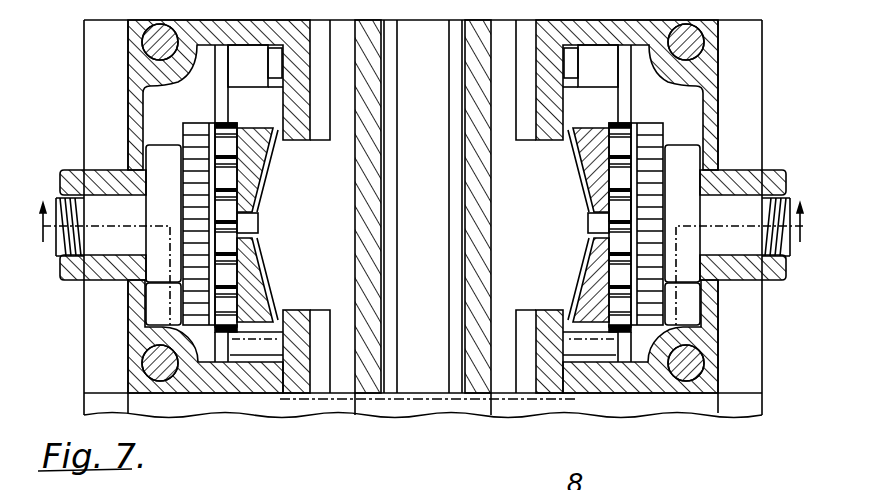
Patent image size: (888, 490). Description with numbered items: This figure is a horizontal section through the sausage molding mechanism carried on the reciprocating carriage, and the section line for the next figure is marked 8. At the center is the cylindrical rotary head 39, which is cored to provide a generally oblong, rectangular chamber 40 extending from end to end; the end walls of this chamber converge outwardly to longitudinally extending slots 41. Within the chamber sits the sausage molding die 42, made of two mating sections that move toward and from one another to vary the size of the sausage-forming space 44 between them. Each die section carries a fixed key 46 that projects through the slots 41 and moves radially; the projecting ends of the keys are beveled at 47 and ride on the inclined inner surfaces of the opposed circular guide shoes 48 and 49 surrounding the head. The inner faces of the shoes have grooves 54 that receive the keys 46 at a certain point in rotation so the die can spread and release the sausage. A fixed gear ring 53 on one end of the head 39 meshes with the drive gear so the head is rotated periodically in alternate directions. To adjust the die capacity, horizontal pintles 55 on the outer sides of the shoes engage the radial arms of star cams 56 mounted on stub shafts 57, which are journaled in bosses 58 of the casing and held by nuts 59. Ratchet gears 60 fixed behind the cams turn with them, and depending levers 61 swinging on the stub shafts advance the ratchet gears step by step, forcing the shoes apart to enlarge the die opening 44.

The section line 8- 8 is at (422, 227).
The rotary head 39 is at (550, 393).
The chamber 40 is at (311, 396).
The slots 41 is at (300, 310).
The sausage molding die 42 is at (365, 395).
The sausage-forming space 44 is at (433, 385).
The key 46 is at (537, 168).
The beveled ends 47 is at (266, 292).
The guide shoe 48 is at (251, 128).
The guide shoe 49 is at (270, 306).
The gear ring 53 is at (574, 78).
The grooves 54 is at (256, 208).
The pintles 55 is at (218, 121).
The star cam 56 is at (620, 204).
The stub shaft 57 is at (72, 281).
The boss 58 is at (742, 172).
The nut 59 is at (70, 170).
The ratchet gear 60 is at (196, 201).
The lever 61 is at (157, 213).